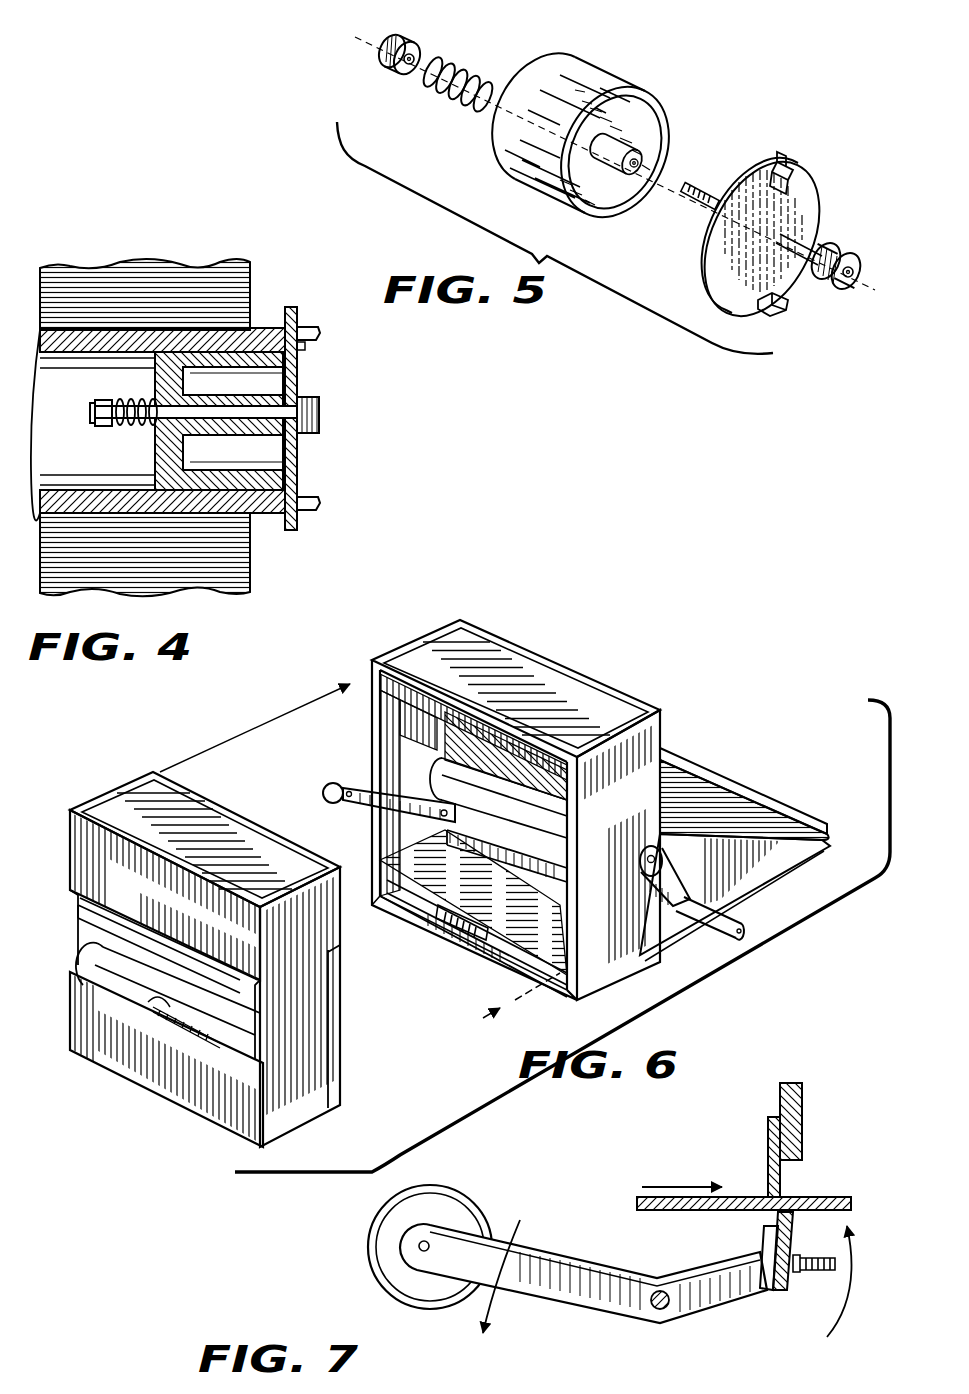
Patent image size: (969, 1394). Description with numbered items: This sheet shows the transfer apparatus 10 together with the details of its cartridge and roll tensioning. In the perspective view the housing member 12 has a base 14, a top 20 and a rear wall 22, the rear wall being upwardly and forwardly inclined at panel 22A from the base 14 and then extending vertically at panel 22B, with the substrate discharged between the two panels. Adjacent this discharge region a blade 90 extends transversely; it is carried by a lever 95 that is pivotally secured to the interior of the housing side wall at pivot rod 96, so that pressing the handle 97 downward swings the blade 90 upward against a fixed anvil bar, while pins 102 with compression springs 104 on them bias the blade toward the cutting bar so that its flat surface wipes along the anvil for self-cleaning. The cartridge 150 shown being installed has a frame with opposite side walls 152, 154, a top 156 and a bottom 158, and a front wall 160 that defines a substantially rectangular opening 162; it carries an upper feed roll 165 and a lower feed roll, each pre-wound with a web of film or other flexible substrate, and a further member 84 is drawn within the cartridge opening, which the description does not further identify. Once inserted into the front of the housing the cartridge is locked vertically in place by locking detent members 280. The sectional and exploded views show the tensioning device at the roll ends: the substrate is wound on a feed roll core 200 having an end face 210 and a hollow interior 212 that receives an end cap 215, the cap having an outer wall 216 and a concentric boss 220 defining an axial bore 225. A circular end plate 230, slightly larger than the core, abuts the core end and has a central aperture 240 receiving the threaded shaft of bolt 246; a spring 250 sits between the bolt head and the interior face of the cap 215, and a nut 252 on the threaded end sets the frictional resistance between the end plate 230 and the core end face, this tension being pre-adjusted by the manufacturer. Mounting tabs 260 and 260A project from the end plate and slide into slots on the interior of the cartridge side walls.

In FIG. 6, the transfer apparatus 10 is at (587, 810).
In FIG. 6, the housing member 12 is at (657, 728).
In FIG. 6, the base 14 is at (627, 972).
In FIG. 6, the top 20 is at (537, 677).
In FIG. 6, the rear wall 22 is at (754, 842).
In FIG. 6, the panel 22A is at (800, 815).
In FIG. 6, the panel 22B is at (662, 752).
In FIG. 6, the roller shaft 84 is at (75, 960).
In FIG. 7, the blade 90 is at (767, 1228).
In FIG. 6, the lever 95 is at (370, 768).
In FIG. 7, the lever 95 is at (563, 1270).
In FIG. 7, the pivot rod 96 is at (660, 1309).
In FIG. 7, the handle 97 is at (462, 1209).
In FIG. 7, the pins 102 is at (802, 1272).
In FIG. 7, the compression springs 104 is at (838, 1258).
In FIG. 6, the cartridge 150 is at (215, 973).
In FIG. 6, the side wall 152 is at (107, 792).
In FIG. 6, the side wall 154 is at (335, 1054).
In FIG. 6, the top 156 is at (240, 832).
In FIG. 6, the bottom 158 is at (287, 1138).
In FIG. 6, the front wall 160 is at (80, 864).
In FIG. 6, the rectangular opening 162 is at (147, 1002).
In FIG. 4, the upper feed roll 165 is at (258, 302).
In FIG. 4, the feed roll core 200 is at (210, 415).
In FIG. 4, the end face 210 is at (312, 336).
In FIG. 4, the hollow interior 212 is at (82, 469).
In FIG. 5, the end cap 215 is at (618, 80).
In FIG. 4, the outer wall 216 is at (261, 421).
In FIG. 4, the boss 220 is at (260, 393).
In FIG. 4, the axial bore 225 is at (256, 441).
In FIG. 5, the circular end plate 230 is at (776, 233).
In FIG. 4, the circular end plate 230 is at (337, 425).
In FIG. 4, the central aperture 240 is at (296, 440).
In FIG. 5, the bolt 246 is at (804, 240).
In FIG. 4, the bolt 246 is at (320, 412).
In FIG. 5, the spring 250 is at (490, 80).
In FIG. 4, the spring 250 is at (138, 402).
In FIG. 5, the nut 252 is at (398, 36).
In FIG. 4, the nut 252 is at (96, 418).
In FIG. 5, the mounting tab 260 is at (788, 178).
In FIG. 4, the mounting tab 260 is at (306, 346).
In FIG. 5, the mounting tab 260A is at (784, 296).
In FIG. 4, the mounting tab 260A is at (314, 508).
In FIG. 6, the locking detent members 280 is at (460, 915).